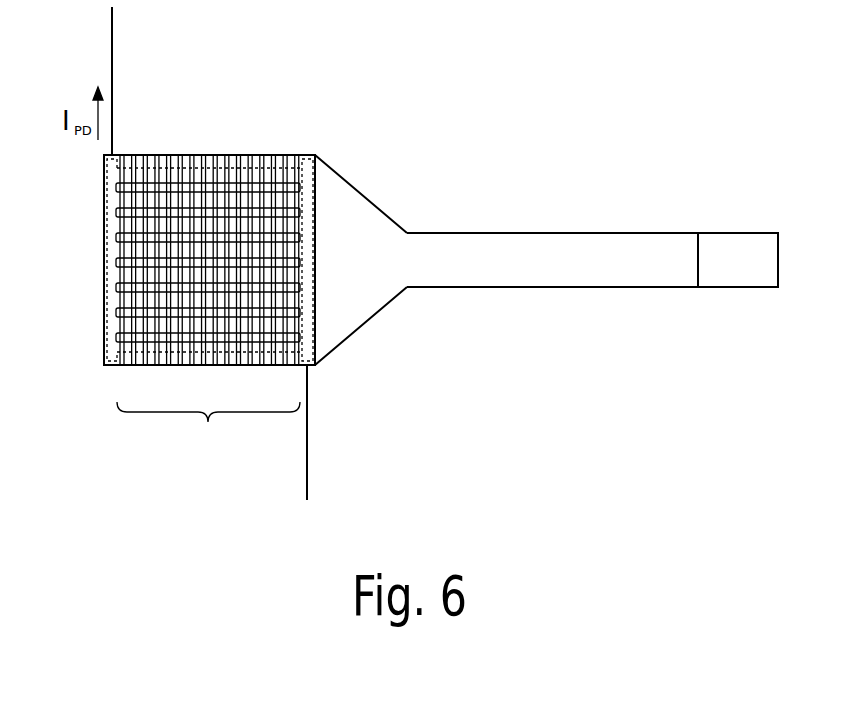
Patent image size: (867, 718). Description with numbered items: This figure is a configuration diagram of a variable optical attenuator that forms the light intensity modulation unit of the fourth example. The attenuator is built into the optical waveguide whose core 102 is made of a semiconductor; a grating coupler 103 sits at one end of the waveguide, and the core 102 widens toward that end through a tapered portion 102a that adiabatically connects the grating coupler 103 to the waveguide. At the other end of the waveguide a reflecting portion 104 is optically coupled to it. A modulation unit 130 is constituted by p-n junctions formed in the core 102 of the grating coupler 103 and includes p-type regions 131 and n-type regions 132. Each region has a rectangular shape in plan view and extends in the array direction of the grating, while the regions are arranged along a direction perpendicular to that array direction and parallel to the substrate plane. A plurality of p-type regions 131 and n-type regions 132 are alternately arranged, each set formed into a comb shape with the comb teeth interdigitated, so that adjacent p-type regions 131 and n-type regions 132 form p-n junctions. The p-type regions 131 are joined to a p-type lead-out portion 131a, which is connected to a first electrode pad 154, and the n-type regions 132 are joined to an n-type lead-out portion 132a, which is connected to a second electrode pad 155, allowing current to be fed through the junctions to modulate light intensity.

The first electrode pad 154 is at (112, 7).
The second electrode pad 155 is at (307, 499).
The modulation unit 130 is at (202, 116).
The n-type lead-out portion 132a is at (108, 254).
The p-type lead-out portion 131a is at (310, 240).
The n-type region 132 is at (200, 250).
The p-type region 131 is at (282, 266).
The grating coupler 103 is at (208, 426).
The tapered portion 102a is at (370, 318).
The core 102 is at (543, 288).
The reflecting portion 104 is at (737, 288).